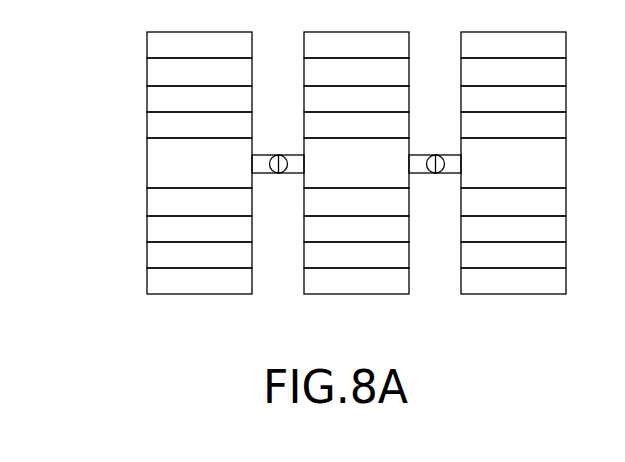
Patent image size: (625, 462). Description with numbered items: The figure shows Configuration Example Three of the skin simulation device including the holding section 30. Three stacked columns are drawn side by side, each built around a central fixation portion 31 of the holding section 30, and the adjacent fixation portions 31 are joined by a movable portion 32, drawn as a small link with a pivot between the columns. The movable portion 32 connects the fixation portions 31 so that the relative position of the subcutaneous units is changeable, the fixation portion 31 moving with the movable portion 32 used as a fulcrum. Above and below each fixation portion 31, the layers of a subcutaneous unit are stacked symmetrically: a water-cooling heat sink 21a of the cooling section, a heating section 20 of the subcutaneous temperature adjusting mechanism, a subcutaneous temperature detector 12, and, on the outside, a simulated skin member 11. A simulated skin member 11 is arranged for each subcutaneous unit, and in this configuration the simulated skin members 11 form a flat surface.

The holding section 30 is at (123, 168).
The simulated skin member 11 is at (356, 163).
The subcutaneous temperature detector 12 is at (356, 163).
The heating section 20 is at (356, 164).
The water-cooling heat sink 21a is at (356, 164).
The fixation portion 31 is at (356, 163).
The movable portion 32 is at (278, 173).